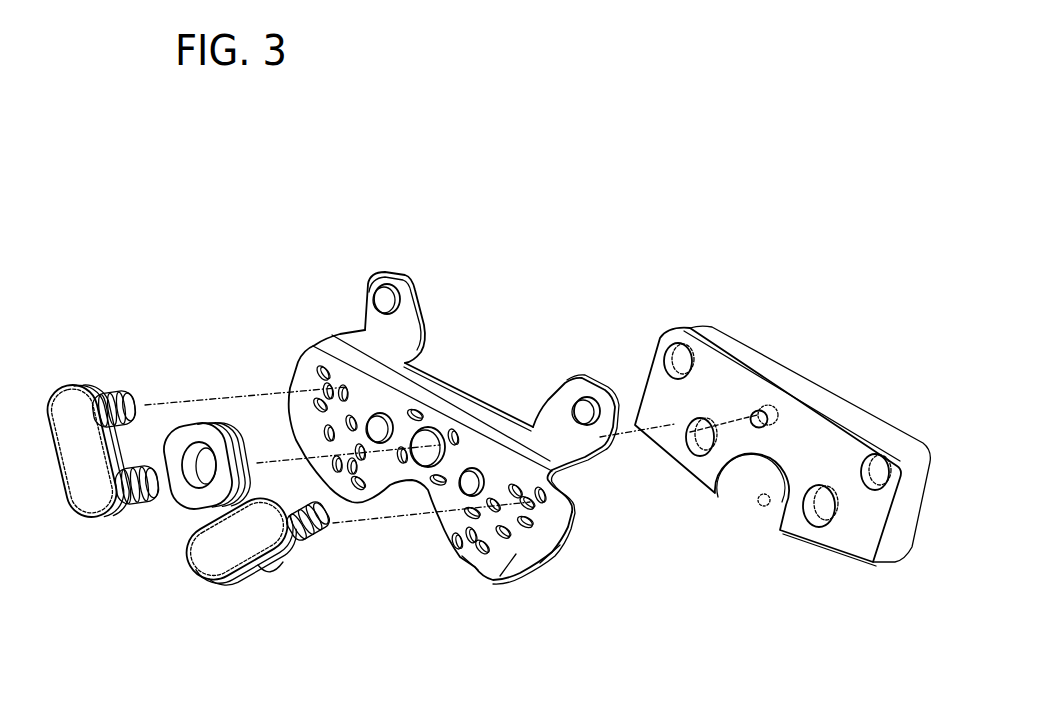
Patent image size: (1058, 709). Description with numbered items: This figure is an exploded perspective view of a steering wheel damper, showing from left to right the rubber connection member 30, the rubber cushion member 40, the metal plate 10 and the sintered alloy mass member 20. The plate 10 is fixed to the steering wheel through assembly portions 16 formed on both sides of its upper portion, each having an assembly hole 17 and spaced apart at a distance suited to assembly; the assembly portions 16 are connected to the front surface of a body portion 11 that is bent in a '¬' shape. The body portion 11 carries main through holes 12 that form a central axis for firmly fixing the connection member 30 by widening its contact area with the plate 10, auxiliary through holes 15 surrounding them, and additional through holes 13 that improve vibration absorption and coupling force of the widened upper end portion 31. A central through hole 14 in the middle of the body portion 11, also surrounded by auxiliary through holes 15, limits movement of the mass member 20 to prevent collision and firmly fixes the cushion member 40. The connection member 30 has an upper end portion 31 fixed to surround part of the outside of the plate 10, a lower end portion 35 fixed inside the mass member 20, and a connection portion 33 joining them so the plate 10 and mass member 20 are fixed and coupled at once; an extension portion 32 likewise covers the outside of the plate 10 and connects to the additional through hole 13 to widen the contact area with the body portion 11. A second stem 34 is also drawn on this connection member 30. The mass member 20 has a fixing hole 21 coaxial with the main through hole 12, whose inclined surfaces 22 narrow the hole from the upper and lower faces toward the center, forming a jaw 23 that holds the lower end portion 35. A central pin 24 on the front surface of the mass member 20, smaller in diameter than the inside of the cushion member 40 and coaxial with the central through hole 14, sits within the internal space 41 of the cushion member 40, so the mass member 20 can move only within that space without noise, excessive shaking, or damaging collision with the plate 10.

The plate 10 is at (482, 396).
The body portion 11 is at (499, 580).
The main through hole 12 is at (556, 548).
The additional through hole 13 is at (365, 415).
The central through hole 14 is at (473, 451).
The auxiliary through hole 15 is at (340, 360).
The assembly portion 16 is at (386, 287).
The assembly hole 17 is at (406, 285).
The mass member 20 is at (826, 377).
The fixing hole 21 is at (676, 330).
The inclined surface 22 is at (672, 358).
The jaw 23 is at (860, 458).
The central pin 24 is at (764, 408).
The connection member 30 is at (243, 598).
The upper end portion 31 is at (89, 452).
The extension portion 32 is at (64, 450).
The connection portion 33 is at (304, 550).
The stem 34 is at (150, 503).
The lower end portion 35 is at (330, 522).
The cushion member 40 is at (195, 396).
The internal space 41 is at (177, 425).